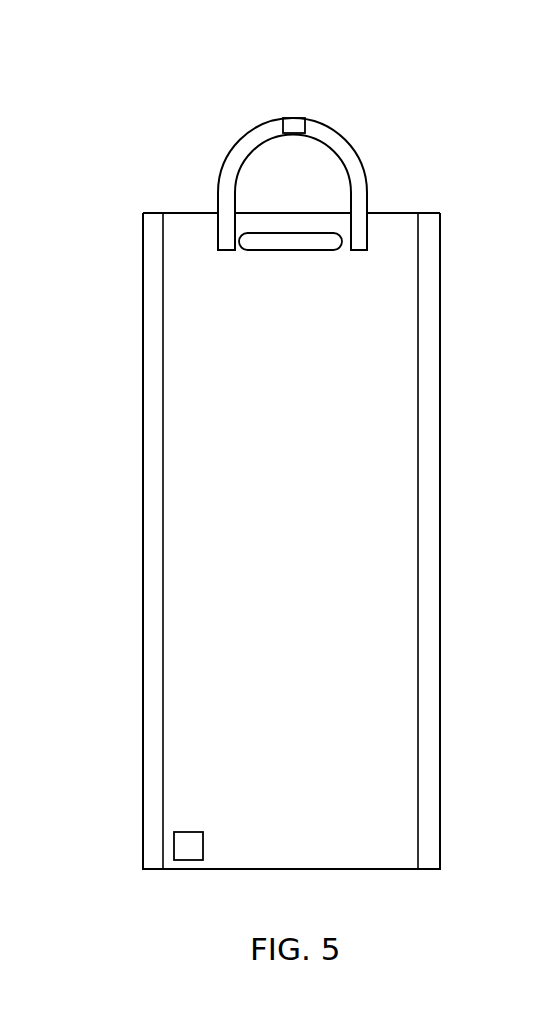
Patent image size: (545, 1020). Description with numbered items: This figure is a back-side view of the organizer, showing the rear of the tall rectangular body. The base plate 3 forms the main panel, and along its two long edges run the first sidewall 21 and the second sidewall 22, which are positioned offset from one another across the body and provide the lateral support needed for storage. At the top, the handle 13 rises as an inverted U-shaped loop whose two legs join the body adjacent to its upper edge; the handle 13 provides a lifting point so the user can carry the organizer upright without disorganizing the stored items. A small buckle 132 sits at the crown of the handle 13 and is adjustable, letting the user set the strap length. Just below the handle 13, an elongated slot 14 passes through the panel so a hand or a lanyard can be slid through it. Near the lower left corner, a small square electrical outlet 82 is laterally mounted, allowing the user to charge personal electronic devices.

The base plate 3 is at (306, 853).
The handle 13 is at (345, 157).
The buckle 132 is at (288, 125).
The slot 14 is at (314, 262).
The first sidewall 21 is at (150, 512).
The second sidewall 22 is at (430, 545).
The electrical outlet 82 is at (189, 847).